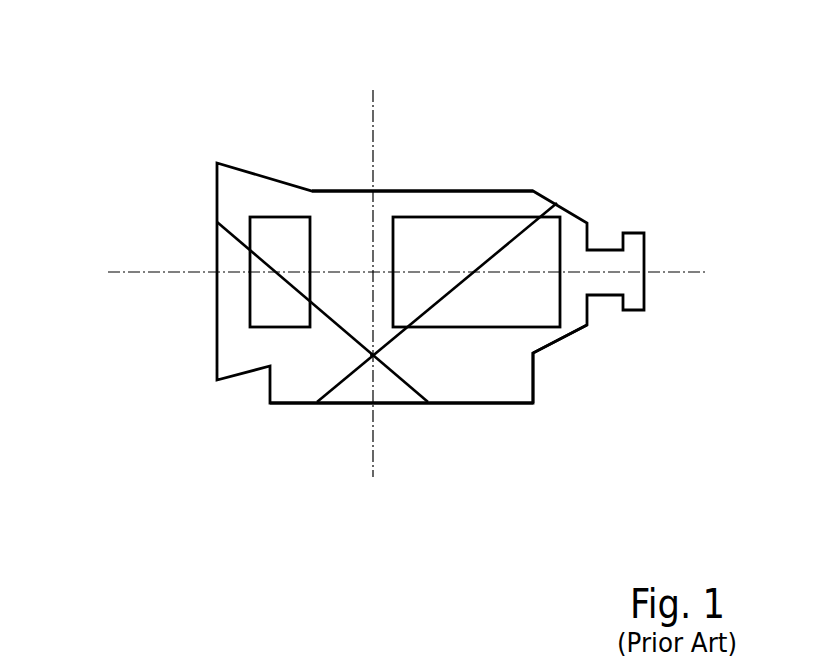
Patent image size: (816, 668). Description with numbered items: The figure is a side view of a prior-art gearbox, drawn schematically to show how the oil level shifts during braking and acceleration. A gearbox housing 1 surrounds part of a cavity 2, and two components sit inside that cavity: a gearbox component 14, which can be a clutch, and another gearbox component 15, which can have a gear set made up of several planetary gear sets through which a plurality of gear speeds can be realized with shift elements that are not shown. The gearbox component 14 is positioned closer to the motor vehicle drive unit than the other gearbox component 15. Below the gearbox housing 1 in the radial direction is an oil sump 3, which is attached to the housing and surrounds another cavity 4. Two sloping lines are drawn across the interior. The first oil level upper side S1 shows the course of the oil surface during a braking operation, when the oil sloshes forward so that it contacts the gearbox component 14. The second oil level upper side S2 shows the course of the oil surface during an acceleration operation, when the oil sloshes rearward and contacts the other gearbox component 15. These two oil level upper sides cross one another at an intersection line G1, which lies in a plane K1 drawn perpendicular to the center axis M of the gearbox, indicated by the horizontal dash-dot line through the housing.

The gearbox housing 1 is at (425, 191).
The cavity 2 is at (478, 200).
The oil sump 3 is at (508, 403).
The another cavity 4 is at (455, 373).
The gearbox component 14 is at (265, 300).
The other gearbox component 15 is at (537, 240).
The plane K1 is at (372, 107).
The center axis M is at (168, 272).
The first oil level upper side S1 is at (233, 232).
The second oil level upper side S2 is at (388, 340).
The intersection line G1 is at (372, 355).